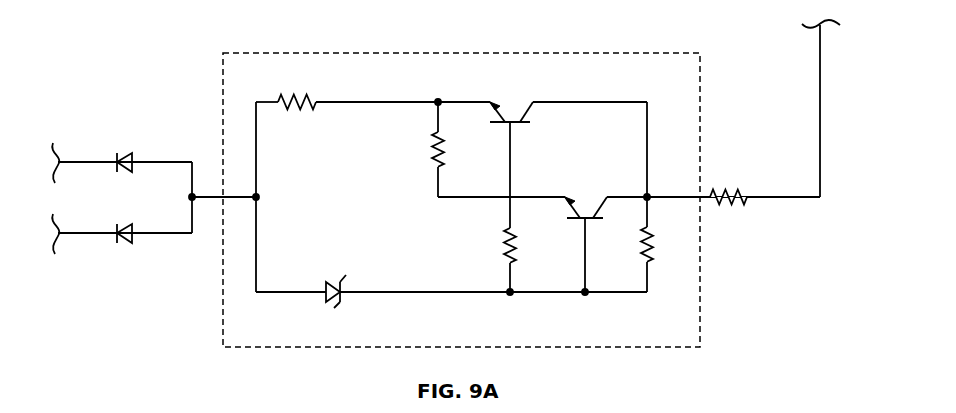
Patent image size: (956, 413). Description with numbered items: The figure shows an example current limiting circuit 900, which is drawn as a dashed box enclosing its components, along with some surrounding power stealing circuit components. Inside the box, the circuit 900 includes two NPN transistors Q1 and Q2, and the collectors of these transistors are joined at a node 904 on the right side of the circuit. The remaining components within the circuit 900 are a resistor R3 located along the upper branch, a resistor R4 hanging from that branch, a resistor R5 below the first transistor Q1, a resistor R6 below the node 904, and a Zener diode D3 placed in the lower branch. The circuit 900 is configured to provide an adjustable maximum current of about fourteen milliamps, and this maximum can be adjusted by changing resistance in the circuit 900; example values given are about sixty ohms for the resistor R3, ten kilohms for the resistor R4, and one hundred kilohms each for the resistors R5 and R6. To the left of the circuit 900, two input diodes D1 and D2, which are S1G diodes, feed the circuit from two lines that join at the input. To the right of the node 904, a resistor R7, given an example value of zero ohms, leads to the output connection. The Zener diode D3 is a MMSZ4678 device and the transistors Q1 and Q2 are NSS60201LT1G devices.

The current limiting circuit 900 is at (492, 51).
The node 904 is at (647, 197).
The diode D1 is at (122, 154).
The diode D2 is at (122, 226).
The Zener diode D3 is at (333, 304).
The resistor R3 is at (297, 90).
The resistor R4 is at (453, 149).
The resistor R5 is at (525, 260).
The resistor R6 is at (662, 244).
The resistor R7 is at (728, 182).
The NPN transistor Q1 is at (511, 151).
The NPN transistor Q2 is at (586, 232).